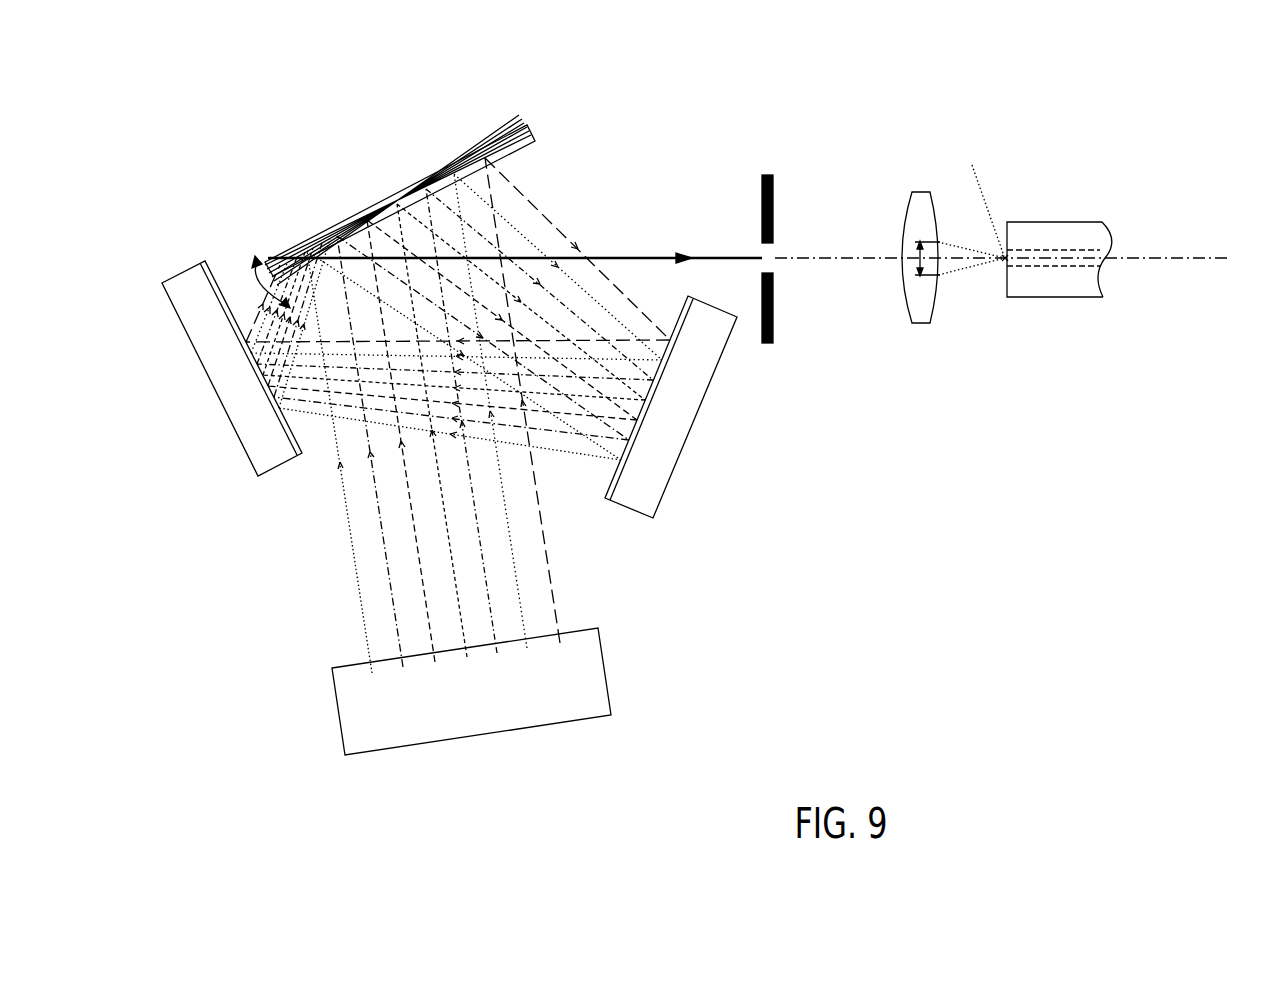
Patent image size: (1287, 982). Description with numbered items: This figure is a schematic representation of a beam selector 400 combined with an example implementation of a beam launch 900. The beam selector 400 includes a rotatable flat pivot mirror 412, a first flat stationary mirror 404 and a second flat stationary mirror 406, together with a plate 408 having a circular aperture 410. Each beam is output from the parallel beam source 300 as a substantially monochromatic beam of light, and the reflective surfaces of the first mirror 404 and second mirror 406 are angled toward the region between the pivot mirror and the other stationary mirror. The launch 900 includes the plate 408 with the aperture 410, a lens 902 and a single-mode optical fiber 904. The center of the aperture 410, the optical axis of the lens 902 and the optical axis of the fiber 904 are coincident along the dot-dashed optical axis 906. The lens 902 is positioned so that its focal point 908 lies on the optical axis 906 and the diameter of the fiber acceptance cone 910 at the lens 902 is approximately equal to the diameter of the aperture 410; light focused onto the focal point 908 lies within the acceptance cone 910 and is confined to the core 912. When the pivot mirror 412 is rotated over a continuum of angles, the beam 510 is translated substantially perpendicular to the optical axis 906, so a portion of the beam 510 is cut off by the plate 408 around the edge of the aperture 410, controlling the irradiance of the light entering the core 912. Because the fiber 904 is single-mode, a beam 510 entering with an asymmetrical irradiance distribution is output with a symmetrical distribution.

The beam launch 900 is at (1166, 114).
The beam selector 400 is at (313, 150).
The flat pivot mirror 412 is at (453, 150).
The second flat stationary mirror 406 is at (210, 383).
The first flat stationary mirror 404 is at (663, 493).
The beam 510 is at (627, 254).
The parallel beam source 300 is at (471, 709).
The plate 408 is at (772, 332).
The aperture 410 is at (768, 250).
The optical axis 906 is at (1221, 264).
The lens 902 is at (907, 307).
The focal point 908 is at (1004, 261).
The acceptance cone 910 is at (980, 248).
The single-mode optical fiber 904 is at (1053, 298).
The core 912 is at (1097, 247).